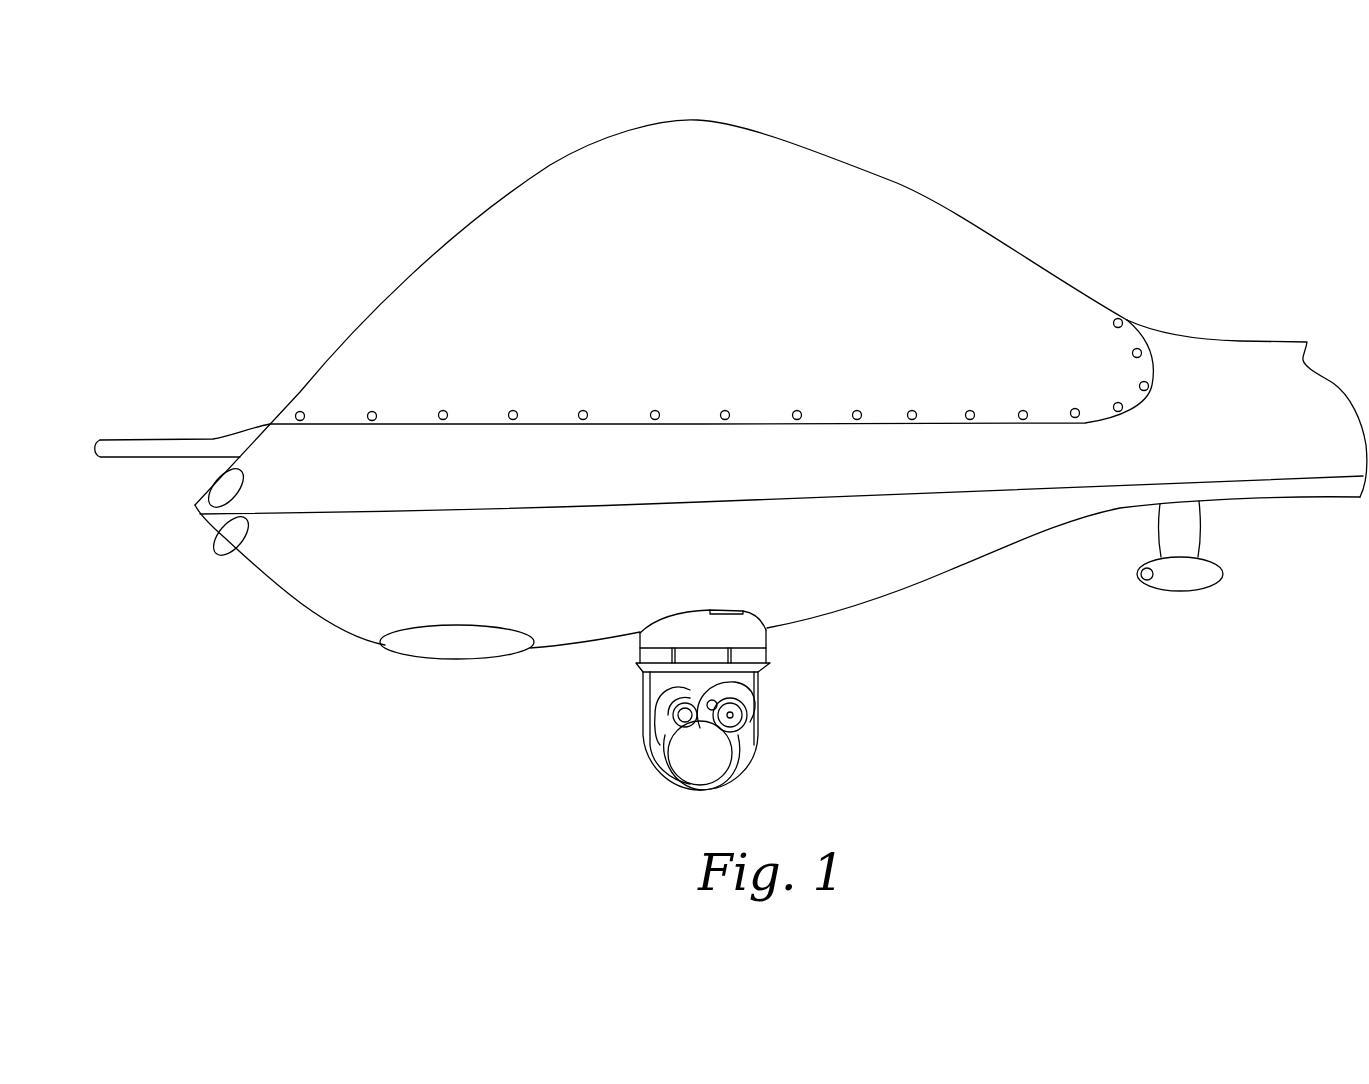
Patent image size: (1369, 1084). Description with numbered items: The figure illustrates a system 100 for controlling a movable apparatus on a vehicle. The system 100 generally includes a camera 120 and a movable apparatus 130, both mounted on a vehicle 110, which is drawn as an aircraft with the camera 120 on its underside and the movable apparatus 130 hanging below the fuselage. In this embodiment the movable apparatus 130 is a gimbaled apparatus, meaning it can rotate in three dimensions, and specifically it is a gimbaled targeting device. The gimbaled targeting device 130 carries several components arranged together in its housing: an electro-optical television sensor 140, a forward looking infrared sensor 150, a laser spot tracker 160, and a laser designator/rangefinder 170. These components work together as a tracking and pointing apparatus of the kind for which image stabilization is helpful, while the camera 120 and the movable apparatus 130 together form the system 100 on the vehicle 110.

The system 100 is at (345, 162).
The vehicle 110 is at (901, 185).
The camera 120 is at (452, 658).
The movable apparatus 130 is at (632, 790).
The electro-optical television (EO-TV) sensor 140 is at (677, 727).
The forward looking infrared (FLIR) sensor 150 is at (700, 758).
The laser spot tracker 160 is at (735, 722).
The laser designator/rangefinder 170 is at (722, 693).